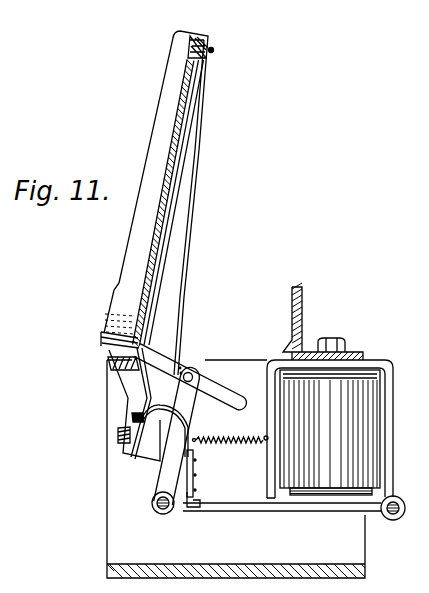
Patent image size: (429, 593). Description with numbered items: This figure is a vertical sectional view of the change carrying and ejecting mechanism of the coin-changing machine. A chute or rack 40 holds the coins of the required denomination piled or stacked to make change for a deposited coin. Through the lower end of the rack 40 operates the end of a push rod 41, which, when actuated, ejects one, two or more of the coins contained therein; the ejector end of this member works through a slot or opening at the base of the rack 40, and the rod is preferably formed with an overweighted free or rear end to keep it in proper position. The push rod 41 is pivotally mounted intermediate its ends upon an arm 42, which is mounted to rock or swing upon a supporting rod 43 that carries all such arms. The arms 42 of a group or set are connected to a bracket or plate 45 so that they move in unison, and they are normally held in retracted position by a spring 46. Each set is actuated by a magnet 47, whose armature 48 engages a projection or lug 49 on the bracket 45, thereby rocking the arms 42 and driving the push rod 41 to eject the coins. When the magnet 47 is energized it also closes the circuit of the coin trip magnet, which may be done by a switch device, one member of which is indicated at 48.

The chute or rack 40 is at (173, 147).
The push rod 41 is at (204, 376).
The arm 42 is at (187, 411).
The supporting rod 43 is at (160, 514).
The bracket 45 is at (195, 470).
The spring 46 is at (245, 443).
The magnet 47 is at (368, 458).
The armature 48 is at (313, 512).
The projection or lug 49 is at (191, 498).